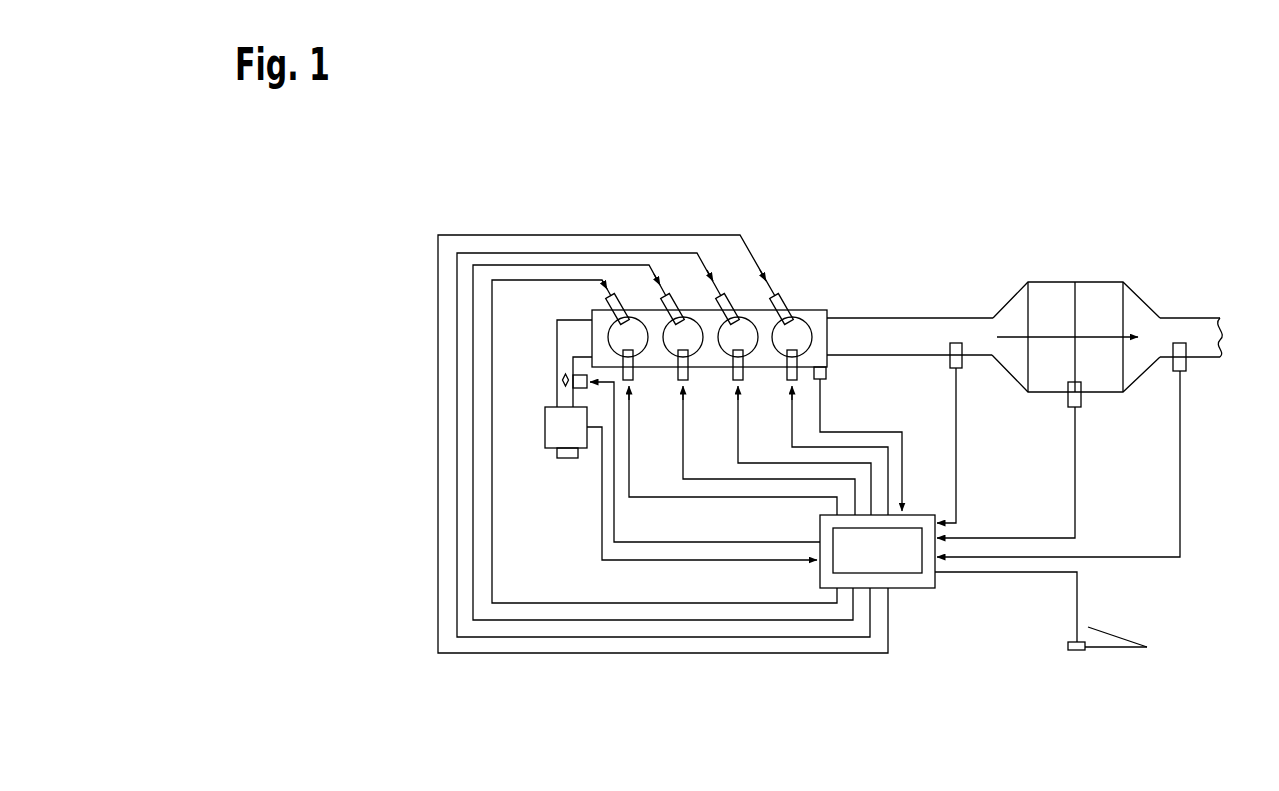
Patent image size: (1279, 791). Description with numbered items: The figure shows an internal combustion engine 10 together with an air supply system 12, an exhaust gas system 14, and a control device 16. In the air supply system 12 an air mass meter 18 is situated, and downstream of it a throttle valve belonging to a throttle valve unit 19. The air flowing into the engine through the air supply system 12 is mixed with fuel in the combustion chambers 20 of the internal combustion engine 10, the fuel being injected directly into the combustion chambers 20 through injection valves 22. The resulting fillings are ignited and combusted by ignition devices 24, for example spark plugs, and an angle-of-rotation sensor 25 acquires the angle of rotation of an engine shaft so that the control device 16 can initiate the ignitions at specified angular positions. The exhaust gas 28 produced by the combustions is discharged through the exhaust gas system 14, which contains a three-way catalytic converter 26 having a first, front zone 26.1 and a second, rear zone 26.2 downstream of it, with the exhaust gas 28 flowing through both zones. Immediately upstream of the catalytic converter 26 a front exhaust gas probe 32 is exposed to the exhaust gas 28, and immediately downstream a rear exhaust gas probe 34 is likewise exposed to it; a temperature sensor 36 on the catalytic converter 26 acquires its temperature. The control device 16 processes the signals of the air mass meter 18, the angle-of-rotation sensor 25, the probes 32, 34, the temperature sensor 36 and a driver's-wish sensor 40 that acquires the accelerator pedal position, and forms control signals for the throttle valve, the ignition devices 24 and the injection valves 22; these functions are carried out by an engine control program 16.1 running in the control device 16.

The internal combustion engine 10 is at (864, 206).
The air supply system 12 is at (564, 469).
The exhaust gas system 14 is at (1243, 420).
The control device 16 is at (930, 589).
The engine control program 16.1 is at (901, 574).
The air mass meter 18 is at (545, 425).
The throttle valve unit 19 is at (573, 369).
The combustion chambers 20 is at (808, 310).
The injection valves 22 is at (779, 378).
The ignition devices 24 is at (787, 295).
The angle-of-rotation sensor 25 is at (828, 372).
The catalytic converter 26 is at (1014, 397).
The first zone 26.1 is at (1047, 287).
The second zone 26.2 is at (1107, 287).
The exhaust gas 28 is at (1095, 337).
The front exhaust gas probe 32 is at (950, 366).
The rear exhaust gas probe 34 is at (1187, 360).
The temperature sensor 36 is at (1082, 400).
The sensor 40 is at (1077, 651).